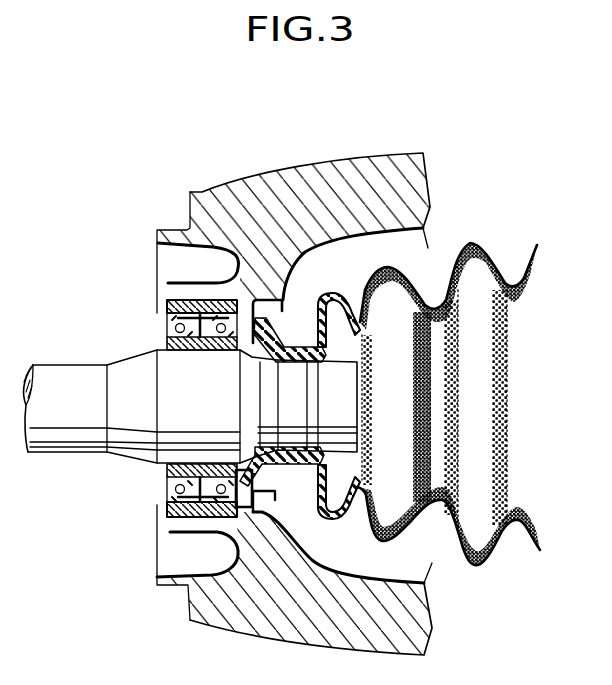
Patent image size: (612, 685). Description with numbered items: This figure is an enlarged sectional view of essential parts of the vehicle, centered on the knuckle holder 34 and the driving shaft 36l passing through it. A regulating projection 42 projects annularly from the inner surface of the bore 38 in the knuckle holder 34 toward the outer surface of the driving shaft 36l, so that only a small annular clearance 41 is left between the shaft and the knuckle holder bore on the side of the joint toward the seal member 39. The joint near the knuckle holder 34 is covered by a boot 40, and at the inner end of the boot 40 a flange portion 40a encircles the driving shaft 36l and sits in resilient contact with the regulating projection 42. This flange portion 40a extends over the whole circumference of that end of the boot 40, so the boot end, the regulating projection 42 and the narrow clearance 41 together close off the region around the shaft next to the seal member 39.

The knuckle holder 34 is at (300, 168).
The driving shaft 36l is at (58, 377).
The bore 38 is at (187, 305).
The seal member 39 is at (170, 478).
The small annular clearance 41 is at (241, 349).
The regulating projection 42 is at (254, 322).
The boot 40 is at (488, 558).
The flange portion 40a is at (256, 495).